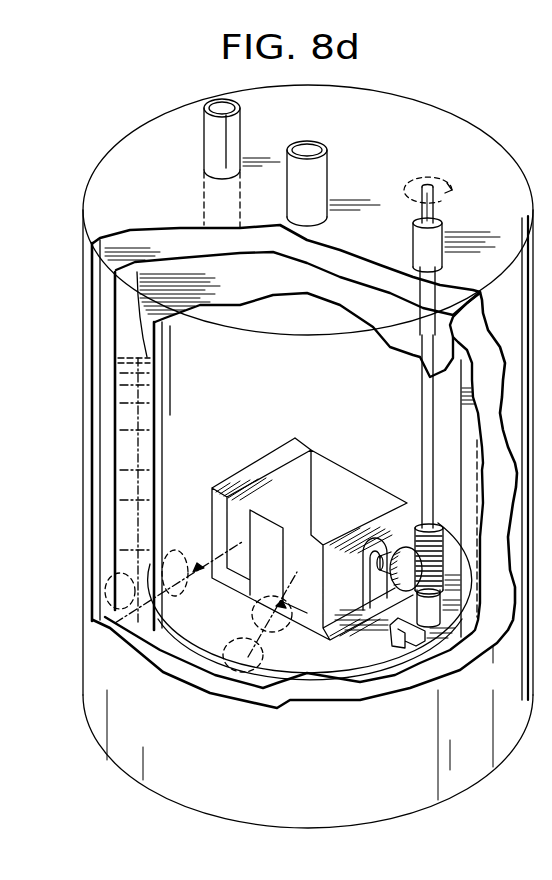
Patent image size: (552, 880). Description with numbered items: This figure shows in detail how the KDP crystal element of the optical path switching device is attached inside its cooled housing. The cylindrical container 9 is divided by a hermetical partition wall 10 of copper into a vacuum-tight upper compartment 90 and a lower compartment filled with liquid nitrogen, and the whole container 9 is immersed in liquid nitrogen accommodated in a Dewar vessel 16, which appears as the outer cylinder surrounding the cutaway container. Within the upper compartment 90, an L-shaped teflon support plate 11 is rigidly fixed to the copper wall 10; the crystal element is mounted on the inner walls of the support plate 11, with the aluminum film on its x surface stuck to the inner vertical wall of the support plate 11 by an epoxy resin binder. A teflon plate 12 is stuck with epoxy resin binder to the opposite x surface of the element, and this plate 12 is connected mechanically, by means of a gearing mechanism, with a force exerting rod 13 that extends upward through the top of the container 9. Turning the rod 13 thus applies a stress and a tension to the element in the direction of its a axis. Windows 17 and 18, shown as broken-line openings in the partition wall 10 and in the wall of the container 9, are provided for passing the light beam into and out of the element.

The cylindrical container 9 is at (152, 470).
The vacuum-tight upper compartment 90 is at (156, 443).
The hermetical partition wall 10 is at (362, 700).
The L-shaped teflon support plate 11 is at (281, 455).
The teflon plate 12 is at (399, 498).
The force exerting rod 13 is at (443, 256).
The Dewar vessel 16 is at (96, 670).
The window 17 is at (166, 560).
The window 18 is at (268, 640).